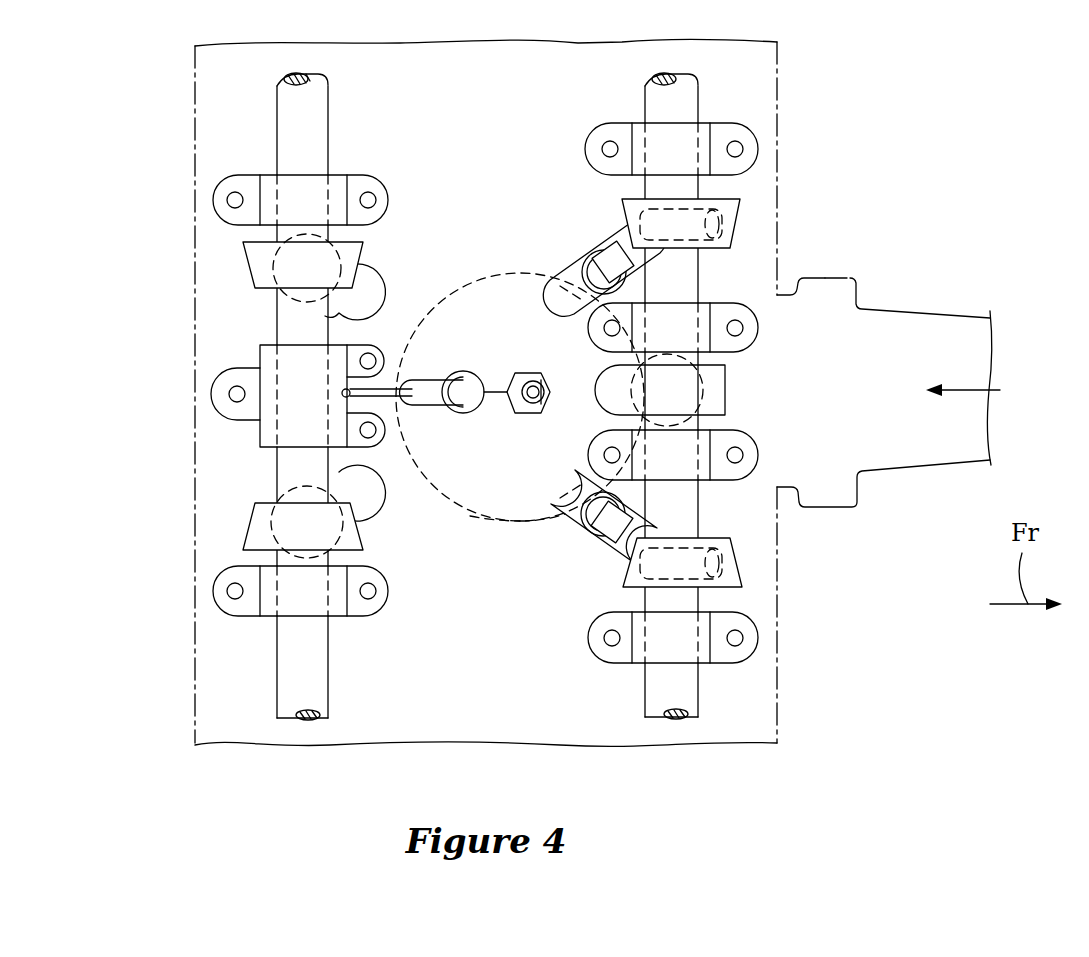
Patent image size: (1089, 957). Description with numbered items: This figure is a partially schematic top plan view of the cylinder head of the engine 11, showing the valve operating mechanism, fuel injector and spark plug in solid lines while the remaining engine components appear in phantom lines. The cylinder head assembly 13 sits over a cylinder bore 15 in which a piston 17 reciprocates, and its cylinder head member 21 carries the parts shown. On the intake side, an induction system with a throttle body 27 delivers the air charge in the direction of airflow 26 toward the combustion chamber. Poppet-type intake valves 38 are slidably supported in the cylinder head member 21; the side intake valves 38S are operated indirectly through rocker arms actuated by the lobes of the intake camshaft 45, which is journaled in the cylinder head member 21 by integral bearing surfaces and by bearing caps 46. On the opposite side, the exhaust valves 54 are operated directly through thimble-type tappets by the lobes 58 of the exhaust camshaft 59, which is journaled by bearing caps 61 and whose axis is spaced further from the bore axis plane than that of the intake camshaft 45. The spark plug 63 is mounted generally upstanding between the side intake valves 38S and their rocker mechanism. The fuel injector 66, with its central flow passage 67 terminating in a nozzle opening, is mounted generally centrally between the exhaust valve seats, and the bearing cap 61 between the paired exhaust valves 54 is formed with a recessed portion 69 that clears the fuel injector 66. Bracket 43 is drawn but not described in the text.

The engine 11 is at (908, 100).
The cylinder head assembly 13 is at (451, 461).
The cylinder bore 15 is at (535, 522).
The piston 17 is at (492, 520).
The cylinder head member 21 is at (792, 718).
The direction of airflow 26 is at (969, 392).
The throttle body 27 is at (943, 318).
The intake valve 38 is at (562, 288).
The side intake valve 38S is at (577, 512).
The pipe clamp 43 is at (628, 242).
The intake camshaft 45 is at (688, 103).
The bearing cap 46 is at (758, 337).
The exhaust valve 54 is at (388, 283).
The lobe 58 is at (278, 127).
The exhaust camshaft 59 is at (290, 115).
The bearing cap 61 is at (237, 376).
The spark plug 63 is at (527, 375).
The fuel injector 66 is at (428, 380).
The central flow passage 67 is at (497, 405).
The recessed portion 69 is at (378, 396).